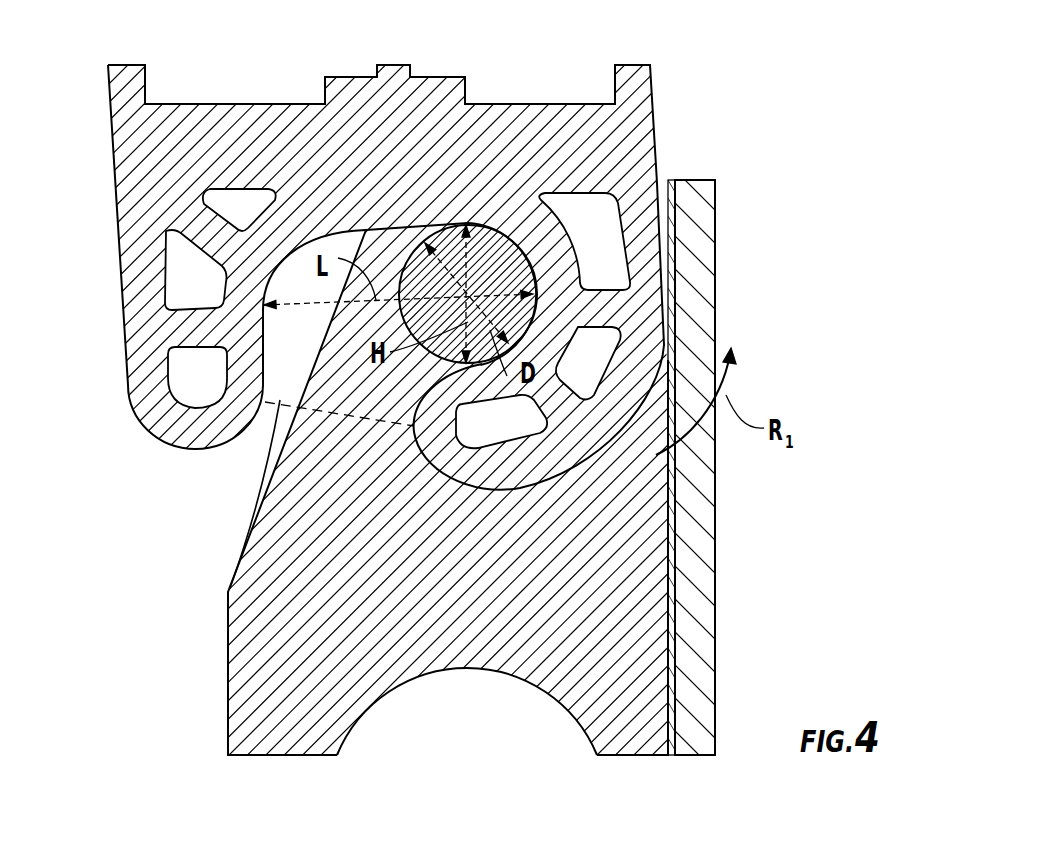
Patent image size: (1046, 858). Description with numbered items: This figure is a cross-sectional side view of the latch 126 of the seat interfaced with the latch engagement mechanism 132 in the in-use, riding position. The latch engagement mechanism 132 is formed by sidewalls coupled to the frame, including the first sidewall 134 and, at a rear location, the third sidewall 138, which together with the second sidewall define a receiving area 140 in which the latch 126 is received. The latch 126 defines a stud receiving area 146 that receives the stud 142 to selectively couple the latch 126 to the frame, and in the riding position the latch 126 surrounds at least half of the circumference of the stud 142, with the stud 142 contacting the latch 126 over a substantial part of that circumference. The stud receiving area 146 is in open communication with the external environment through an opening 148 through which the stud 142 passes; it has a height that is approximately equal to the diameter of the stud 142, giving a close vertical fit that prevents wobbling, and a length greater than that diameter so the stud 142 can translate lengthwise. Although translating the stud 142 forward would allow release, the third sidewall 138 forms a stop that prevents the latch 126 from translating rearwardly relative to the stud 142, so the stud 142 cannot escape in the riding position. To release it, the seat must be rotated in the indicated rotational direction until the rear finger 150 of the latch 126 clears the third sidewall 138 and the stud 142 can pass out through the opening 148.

The latch 126 is at (645, 120).
The latch engagement mechanism 132 is at (705, 528).
The first sidewall 134 is at (396, 670).
The third sidewall 138 is at (703, 663).
The receiving area 140 is at (300, 587).
The stud 142 is at (522, 305).
The stud receiving area 146 is at (298, 277).
The opening 148 is at (262, 433).
The rear finger 150 is at (637, 371).